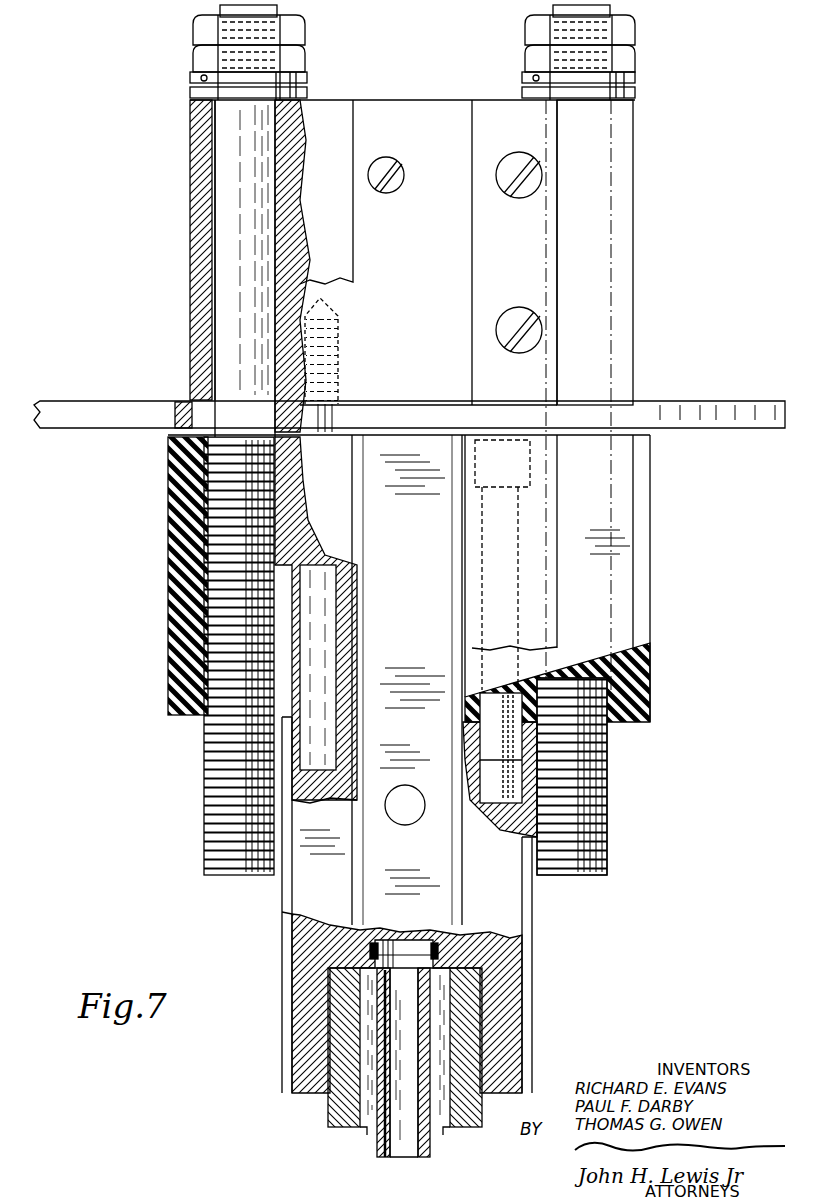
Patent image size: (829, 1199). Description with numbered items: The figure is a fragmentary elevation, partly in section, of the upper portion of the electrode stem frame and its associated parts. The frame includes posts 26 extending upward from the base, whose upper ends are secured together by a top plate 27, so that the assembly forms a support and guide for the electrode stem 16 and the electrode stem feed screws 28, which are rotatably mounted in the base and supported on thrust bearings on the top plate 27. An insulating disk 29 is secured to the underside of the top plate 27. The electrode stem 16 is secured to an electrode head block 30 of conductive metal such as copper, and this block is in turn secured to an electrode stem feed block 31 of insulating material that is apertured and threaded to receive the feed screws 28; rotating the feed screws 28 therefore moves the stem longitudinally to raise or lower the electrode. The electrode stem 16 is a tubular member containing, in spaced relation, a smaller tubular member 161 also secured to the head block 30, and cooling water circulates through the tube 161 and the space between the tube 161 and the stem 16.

The electrode stem 16 is at (337, 1107).
The smaller tubular member 161 is at (377, 1138).
The posts 26 is at (480, 234).
The top plate 27 is at (627, 268).
The electrode stem feed screws 28 is at (203, 832).
The insulating disk 29 is at (712, 405).
The electrode head block 30 is at (507, 978).
The electrode stem feed block 31 is at (172, 575).